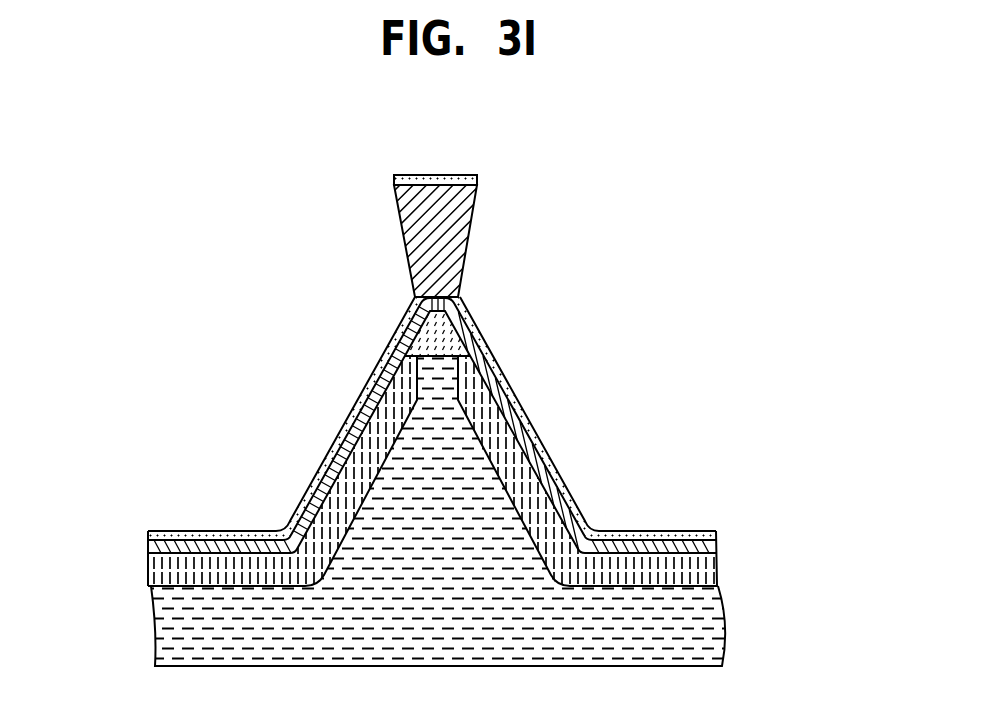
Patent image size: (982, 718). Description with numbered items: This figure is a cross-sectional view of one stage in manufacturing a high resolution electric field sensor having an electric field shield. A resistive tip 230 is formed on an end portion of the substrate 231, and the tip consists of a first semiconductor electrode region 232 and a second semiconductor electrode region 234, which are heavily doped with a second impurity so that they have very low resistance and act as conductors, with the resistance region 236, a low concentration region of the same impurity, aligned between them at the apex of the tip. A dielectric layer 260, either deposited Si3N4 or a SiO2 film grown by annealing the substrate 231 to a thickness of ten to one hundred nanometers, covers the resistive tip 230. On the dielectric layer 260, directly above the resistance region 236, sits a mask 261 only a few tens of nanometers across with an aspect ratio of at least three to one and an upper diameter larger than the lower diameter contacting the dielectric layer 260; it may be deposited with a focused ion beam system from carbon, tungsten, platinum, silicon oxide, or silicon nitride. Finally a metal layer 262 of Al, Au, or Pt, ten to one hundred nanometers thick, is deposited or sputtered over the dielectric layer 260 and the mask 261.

The resistive tip 230 is at (259, 328).
The substrate 231 is at (462, 607).
The first semiconductor electrode region 232 is at (165, 571).
The second semiconductor electrode region 234 is at (708, 570).
The resistance region 236 is at (448, 340).
The dielectric layer 260 is at (563, 503).
The mask 261 is at (458, 262).
The metal layer 262 is at (434, 174).